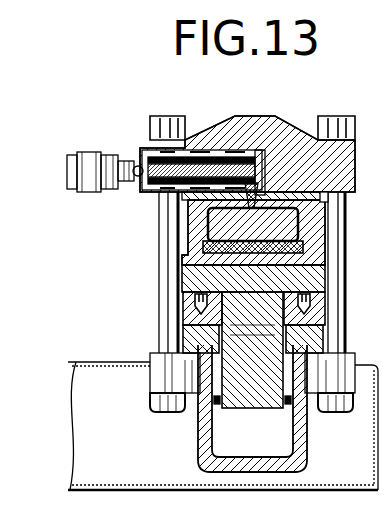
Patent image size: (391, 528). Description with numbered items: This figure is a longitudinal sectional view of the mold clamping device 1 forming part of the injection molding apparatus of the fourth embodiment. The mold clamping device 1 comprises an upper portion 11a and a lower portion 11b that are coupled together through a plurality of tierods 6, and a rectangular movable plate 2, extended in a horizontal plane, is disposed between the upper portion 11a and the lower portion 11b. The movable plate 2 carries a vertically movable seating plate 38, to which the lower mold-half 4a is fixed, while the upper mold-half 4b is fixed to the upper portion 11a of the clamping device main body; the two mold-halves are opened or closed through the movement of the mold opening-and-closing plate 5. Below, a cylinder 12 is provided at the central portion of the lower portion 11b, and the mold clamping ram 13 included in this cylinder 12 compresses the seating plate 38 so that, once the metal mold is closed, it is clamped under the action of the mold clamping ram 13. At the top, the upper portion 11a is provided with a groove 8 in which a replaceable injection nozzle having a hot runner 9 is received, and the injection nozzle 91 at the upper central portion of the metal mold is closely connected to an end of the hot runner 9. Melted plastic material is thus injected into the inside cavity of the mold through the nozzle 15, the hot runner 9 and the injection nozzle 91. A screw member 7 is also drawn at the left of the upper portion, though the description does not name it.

The mold clamping device 1 is at (286, 116).
The movable plate 2 is at (186, 305).
The lower mold-half 4a is at (312, 250).
The upper mold-half 4b is at (196, 212).
The mold opening-and-closing plate 5 is at (338, 197).
The tierods 6 is at (162, 244).
The adjusting screw 7 is at (95, 150).
The groove 8 is at (195, 138).
The hot runner 9 is at (245, 116).
The injection nozzle 91 is at (271, 118).
The upper portion 11a is at (205, 140).
The lower portion 11b is at (150, 380).
The cylinder 12 is at (250, 474).
The mold clamping ram 13 is at (283, 398).
The nozzle 15 is at (132, 160).
The movable seating plate 38 is at (200, 278).